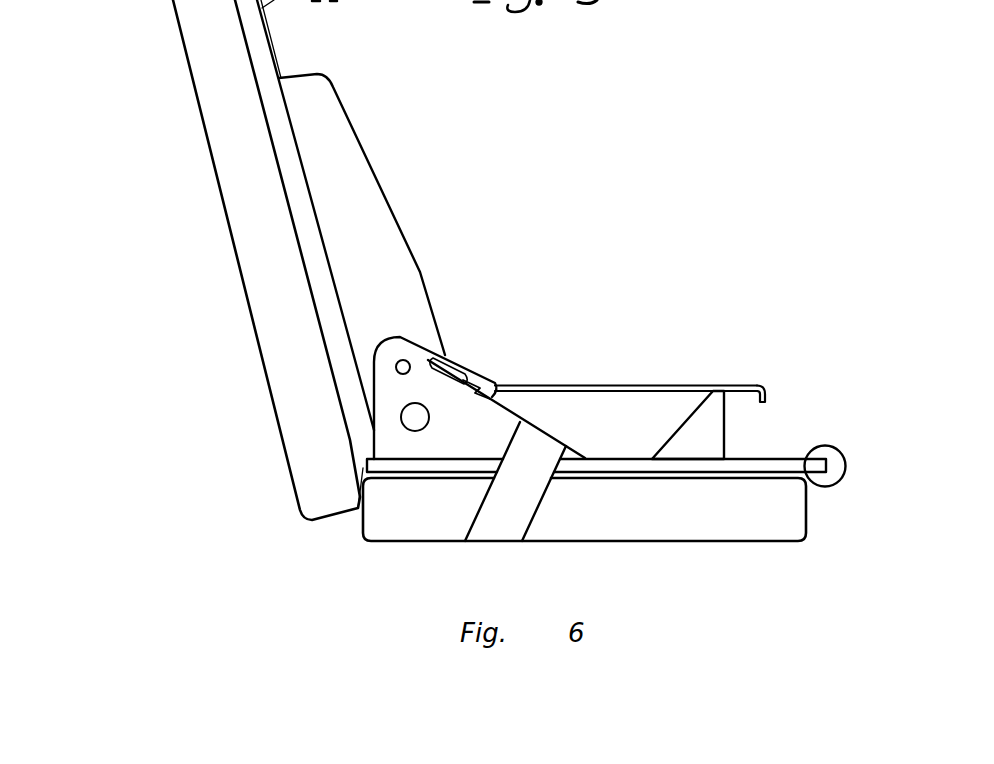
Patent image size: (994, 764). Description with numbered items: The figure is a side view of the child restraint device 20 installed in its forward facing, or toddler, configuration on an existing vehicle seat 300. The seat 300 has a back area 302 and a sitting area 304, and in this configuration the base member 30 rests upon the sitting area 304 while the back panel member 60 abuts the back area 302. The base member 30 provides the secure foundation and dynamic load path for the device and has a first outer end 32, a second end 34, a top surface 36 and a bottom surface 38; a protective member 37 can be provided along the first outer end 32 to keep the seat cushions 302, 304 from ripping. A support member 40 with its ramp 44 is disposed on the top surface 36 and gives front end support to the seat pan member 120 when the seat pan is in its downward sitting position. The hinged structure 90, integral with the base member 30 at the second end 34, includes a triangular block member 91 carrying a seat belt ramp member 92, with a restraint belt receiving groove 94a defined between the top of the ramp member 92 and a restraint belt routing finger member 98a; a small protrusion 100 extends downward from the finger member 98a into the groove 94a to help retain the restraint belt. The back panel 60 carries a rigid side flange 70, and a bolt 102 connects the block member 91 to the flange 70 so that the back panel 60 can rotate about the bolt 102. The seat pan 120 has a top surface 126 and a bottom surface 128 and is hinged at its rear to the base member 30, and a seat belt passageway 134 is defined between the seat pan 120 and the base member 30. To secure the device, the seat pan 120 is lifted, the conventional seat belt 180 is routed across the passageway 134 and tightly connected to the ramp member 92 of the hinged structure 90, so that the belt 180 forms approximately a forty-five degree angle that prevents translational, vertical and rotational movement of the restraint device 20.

The child restraint device 20 is at (483, 215).
The base member 30 is at (805, 537).
The first outer end 32 is at (836, 451).
The second end 34 is at (363, 468).
The top surface 36 is at (757, 457).
The protective member 37 is at (836, 468).
The bottom surface 38 is at (415, 473).
The support member 40 is at (717, 448).
The ramp 44 is at (672, 440).
The back panel member 60 is at (323, 247).
The rigid side flange 70 is at (338, 160).
The hinged structure 90 is at (472, 448).
The triangular block member 91 is at (500, 432).
The seat belt ramp member 92 is at (492, 405).
The restraint belt receiving groove 94a is at (463, 378).
The restraint belt routing finger member 98a is at (448, 353).
The small protrusion 100 is at (520, 388).
The bolt 102 is at (396, 366).
The seat pan member 120 is at (638, 387).
The top surface 126 is at (707, 387).
The bottom surface 128 is at (533, 395).
The seat belt passageway 134 is at (620, 403).
The seat belt 180 is at (492, 525).
The vehicle seat 300 is at (240, 397).
The back area 302 is at (243, 208).
The sitting area 304 is at (630, 525).